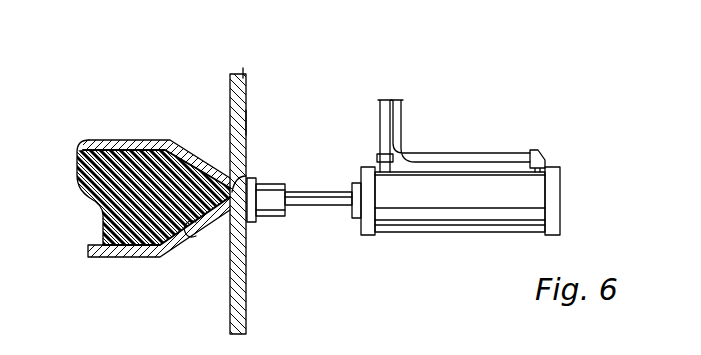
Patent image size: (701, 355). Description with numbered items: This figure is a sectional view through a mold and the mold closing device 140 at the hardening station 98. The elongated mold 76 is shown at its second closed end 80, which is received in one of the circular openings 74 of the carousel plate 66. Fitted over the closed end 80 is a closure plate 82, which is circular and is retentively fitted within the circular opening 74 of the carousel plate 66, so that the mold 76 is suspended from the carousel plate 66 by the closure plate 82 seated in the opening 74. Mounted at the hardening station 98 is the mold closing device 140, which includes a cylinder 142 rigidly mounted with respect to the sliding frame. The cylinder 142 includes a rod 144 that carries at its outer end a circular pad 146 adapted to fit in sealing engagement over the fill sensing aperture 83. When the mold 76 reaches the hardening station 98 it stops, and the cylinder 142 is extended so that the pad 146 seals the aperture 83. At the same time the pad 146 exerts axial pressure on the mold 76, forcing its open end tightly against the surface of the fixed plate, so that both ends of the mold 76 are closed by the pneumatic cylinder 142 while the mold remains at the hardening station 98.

The carousel plate 66 is at (246, 74).
The circular opening 74 is at (234, 118).
The elongated mold 76 is at (112, 140).
The second closed end 80 is at (193, 224).
The closure plate 82 is at (247, 124).
The fill sensing aperture 83 is at (248, 170).
The hardening station 98 is at (366, 72).
The mold closing device 140 is at (429, 109).
The cylinder 142 is at (468, 172).
The rod 144 is at (309, 206).
The circular pad 146 is at (268, 218).